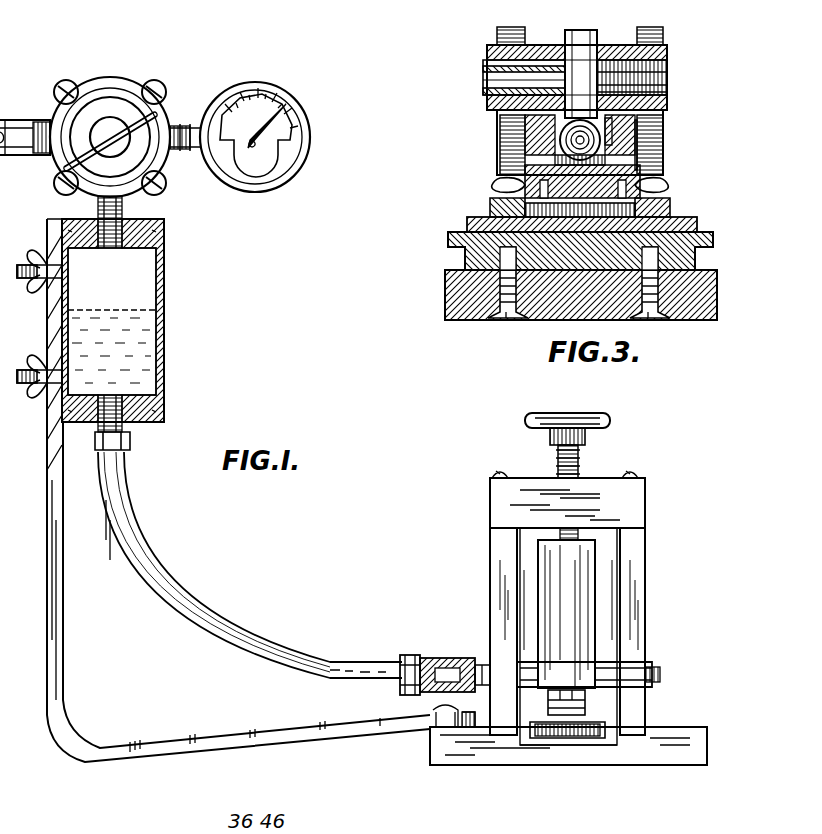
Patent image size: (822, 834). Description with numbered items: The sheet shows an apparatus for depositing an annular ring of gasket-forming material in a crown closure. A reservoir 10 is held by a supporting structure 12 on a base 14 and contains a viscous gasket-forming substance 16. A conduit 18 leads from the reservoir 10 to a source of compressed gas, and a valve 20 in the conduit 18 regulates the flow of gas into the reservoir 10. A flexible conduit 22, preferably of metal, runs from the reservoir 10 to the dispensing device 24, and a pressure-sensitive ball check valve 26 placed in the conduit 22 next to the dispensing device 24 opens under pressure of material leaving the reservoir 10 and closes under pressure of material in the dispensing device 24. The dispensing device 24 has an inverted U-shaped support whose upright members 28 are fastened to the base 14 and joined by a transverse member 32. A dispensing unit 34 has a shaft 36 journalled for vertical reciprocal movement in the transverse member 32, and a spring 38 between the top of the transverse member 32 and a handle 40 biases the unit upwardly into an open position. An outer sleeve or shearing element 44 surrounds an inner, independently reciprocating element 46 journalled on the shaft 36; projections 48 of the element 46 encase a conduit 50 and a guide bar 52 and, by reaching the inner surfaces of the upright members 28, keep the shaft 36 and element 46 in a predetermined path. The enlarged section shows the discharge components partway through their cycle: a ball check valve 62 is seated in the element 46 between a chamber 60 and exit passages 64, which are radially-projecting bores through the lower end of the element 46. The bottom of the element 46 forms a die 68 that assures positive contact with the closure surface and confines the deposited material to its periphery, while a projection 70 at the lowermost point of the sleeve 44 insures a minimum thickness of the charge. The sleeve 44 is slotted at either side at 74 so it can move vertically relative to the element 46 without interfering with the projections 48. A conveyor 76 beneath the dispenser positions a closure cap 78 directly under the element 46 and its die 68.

In FIG. 1, the reservoir 10 is at (165, 280).
In FIG. 1, the supporting structure 12 is at (112, 765).
In FIG. 1, the base 14 is at (455, 760).
In FIG. 3, the base 14 is at (455, 292).
In FIG. 1, the viscous gasket-forming substance 16 is at (145, 352).
In FIG. 3, the viscous gasket-forming substance 16 is at (500, 188).
In FIG. 1, the conduit 18 is at (125, 212).
In FIG. 1, the valve 20 is at (130, 80).
In FIG. 1, the flexible conduit 22 is at (215, 628).
In FIG. 1, the dispensing device 24 is at (668, 550).
In FIG. 1, the pressure-sensitive ball check valve 26 is at (440, 660).
In FIG. 1, the upright members 28 is at (495, 563).
In FIG. 1, the transverse member 32 is at (635, 496).
In FIG. 1, the dispensing unit 34 is at (535, 445).
In FIG. 1, the shaft 36 is at (562, 530).
In FIG. 3, the shaft 36 is at (580, 35).
In FIG. 1, the spring 38 is at (580, 464).
In FIG. 1, the handle 40 is at (610, 420).
In FIG. 1, the outer sleeve or shearing element 44 is at (592, 586).
In FIG. 3, the outer sleeve or shearing element 44 is at (665, 40).
In FIG. 3, the inner reciprocating element 46 is at (628, 38).
In FIG. 1, the projections 48 is at (602, 666).
In FIG. 3, the projections 48 is at (492, 45).
In FIG. 3, the conduit 50 is at (490, 82).
In FIG. 1, the guide bar 52 is at (660, 674).
In FIG. 3, the guide bar 52 is at (665, 74).
In FIG. 3, the chamber 60 is at (495, 106).
In FIG. 3, the ball check valve 62 is at (592, 136).
In FIG. 3, the exit passages 64 is at (500, 160).
In FIG. 1, the die 68 is at (588, 712).
In FIG. 3, the die 68 is at (682, 214).
In FIG. 3, the projection 70 is at (652, 192).
In FIG. 3, the slots 74 is at (655, 128).
In FIG. 1, the conveyor 76 is at (612, 728).
In FIG. 3, the conveyor 76 is at (705, 240).
In FIG. 1, the closure cap 78 is at (562, 740).
In FIG. 3, the closure cap 78 is at (668, 202).